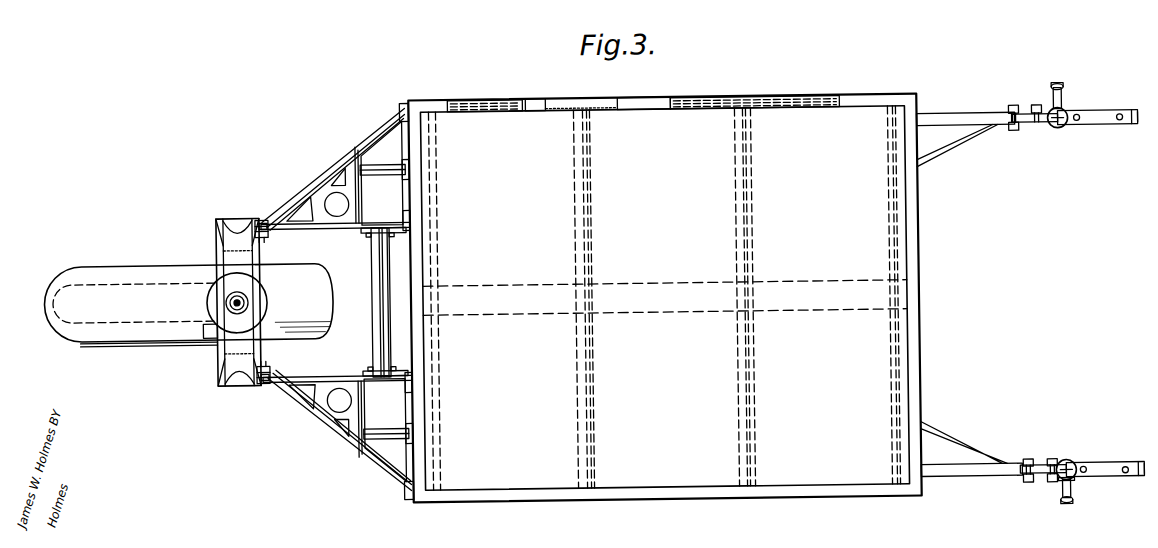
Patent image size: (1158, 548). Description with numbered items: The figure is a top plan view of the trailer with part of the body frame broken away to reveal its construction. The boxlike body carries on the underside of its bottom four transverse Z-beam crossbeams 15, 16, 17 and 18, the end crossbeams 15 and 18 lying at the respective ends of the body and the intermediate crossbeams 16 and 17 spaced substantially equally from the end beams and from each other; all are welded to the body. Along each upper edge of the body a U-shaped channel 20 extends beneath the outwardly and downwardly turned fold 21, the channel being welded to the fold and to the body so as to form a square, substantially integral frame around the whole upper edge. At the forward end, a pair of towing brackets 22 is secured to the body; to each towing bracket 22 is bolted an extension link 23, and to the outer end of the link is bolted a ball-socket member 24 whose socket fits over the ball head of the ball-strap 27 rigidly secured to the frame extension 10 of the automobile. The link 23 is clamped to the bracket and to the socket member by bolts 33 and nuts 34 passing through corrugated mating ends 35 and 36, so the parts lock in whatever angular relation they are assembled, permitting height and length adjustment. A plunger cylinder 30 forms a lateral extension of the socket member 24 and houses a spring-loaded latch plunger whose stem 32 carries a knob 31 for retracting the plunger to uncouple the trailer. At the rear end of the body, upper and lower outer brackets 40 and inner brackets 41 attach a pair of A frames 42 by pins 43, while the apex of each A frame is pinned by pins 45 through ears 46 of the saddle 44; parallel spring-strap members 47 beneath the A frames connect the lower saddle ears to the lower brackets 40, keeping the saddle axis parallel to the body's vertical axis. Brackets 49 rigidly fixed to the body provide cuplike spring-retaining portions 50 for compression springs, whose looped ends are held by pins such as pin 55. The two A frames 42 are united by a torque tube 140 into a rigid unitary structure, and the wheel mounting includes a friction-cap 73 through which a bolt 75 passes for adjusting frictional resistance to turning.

The frame extension 10 is at (1128, 131).
The Z-beam crossbeam 15 is at (440, 268).
The Z-beam crossbeam 16 is at (594, 258).
The Z-beam crossbeam 17 is at (754, 247).
The Z-beam crossbeam 18 is at (890, 216).
The U-shaped channel member 20 is at (536, 98).
The outwardly and downwardly turned fold 21 is at (484, 97).
The towing bracket 22 is at (958, 121).
The extension link 23 is at (1030, 128).
The ball-socket member 24 is at (1056, 133).
The ball-strap 27 is at (1090, 131).
The plunger cylinder 30 is at (1066, 104).
The knob 31 is at (1061, 87).
The plunger stem 32 is at (1016, 110).
The bolt 33 is at (1014, 135).
The nut 34 is at (1040, 109).
The mating end 35 is at (1048, 464).
The mating end 36 is at (1062, 488).
The outer bracket 40 is at (404, 104).
The inner bracket 41 is at (410, 215).
The A frame 42 is at (334, 236).
The pin 43 is at (404, 364).
The saddle 44 is at (222, 238).
The pin 45 is at (262, 215).
The ear 46 is at (268, 228).
The spring-strap member 47 is at (349, 150).
The bracket 49 is at (382, 175).
The cuplike spring-retaining portion 50 is at (330, 165).
The pin 55 is at (315, 278).
The friction-cap 73 is at (207, 297).
The bolt 75 is at (247, 297).
The torque tube 140 is at (372, 265).